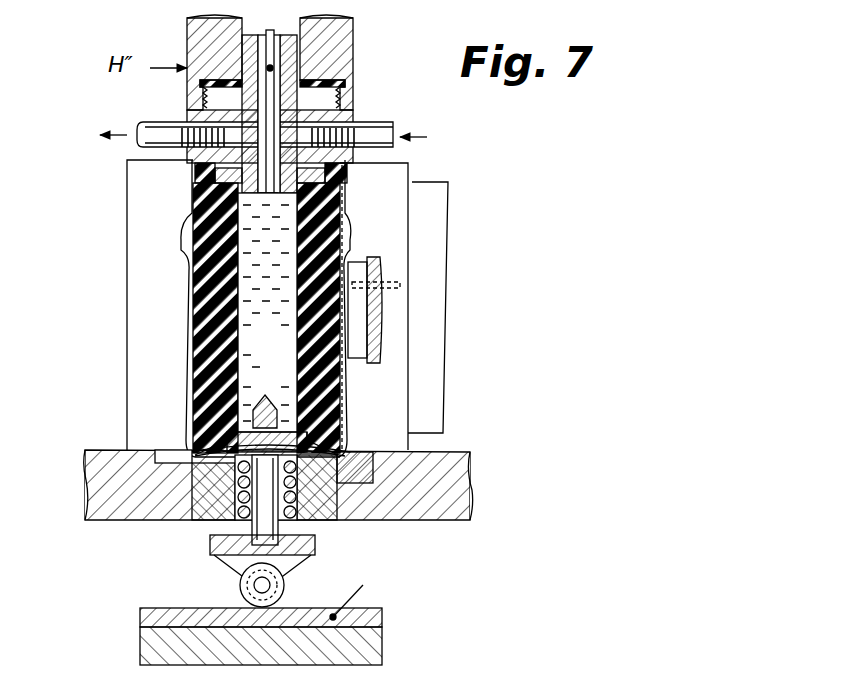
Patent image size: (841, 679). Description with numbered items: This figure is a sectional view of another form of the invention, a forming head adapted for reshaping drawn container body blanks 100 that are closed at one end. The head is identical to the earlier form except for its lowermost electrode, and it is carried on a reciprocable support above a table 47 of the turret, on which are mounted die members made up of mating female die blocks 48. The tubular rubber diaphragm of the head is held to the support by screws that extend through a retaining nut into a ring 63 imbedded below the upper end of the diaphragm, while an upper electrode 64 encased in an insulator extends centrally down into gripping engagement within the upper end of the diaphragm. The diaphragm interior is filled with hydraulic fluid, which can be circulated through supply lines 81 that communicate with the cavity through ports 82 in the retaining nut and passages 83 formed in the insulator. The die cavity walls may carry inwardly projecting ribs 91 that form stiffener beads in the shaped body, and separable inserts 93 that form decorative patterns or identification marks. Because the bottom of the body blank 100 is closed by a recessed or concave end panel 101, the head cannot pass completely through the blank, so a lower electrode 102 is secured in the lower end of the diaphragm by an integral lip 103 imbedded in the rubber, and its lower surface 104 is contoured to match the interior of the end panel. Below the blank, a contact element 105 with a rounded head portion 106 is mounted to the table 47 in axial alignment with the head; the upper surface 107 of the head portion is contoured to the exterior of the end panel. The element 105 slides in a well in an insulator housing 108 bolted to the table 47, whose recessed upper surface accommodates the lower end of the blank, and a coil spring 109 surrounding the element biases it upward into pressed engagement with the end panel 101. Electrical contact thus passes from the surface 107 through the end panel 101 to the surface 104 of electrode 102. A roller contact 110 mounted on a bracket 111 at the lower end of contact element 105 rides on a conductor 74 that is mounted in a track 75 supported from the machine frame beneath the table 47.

The table 47 is at (95, 492).
The female die blocks 48 is at (143, 204).
The ring 63 is at (193, 176).
The electrode 64 is at (338, 181).
The conductor 74 is at (183, 607).
The track 75 is at (152, 645).
The supply lines 81 is at (370, 130).
The ports 82 is at (306, 134).
The passages 83 is at (296, 157).
The ribs 91 is at (186, 380).
The inserts 93 is at (356, 313).
The drawn container body blank 100 is at (190, 267).
The end panel 101 is at (190, 433).
The lower electrode 102 is at (266, 396).
The integral lip 103 is at (340, 418).
The lower surface 104 is at (282, 420).
The contact element 105 is at (300, 537).
The rounded head portion 106 is at (342, 448).
The upper surface 107 is at (252, 453).
The insulator housing 108 is at (328, 522).
The coil spring 109 is at (250, 525).
The roller contact 110 is at (284, 585).
The bracket 111 is at (234, 567).